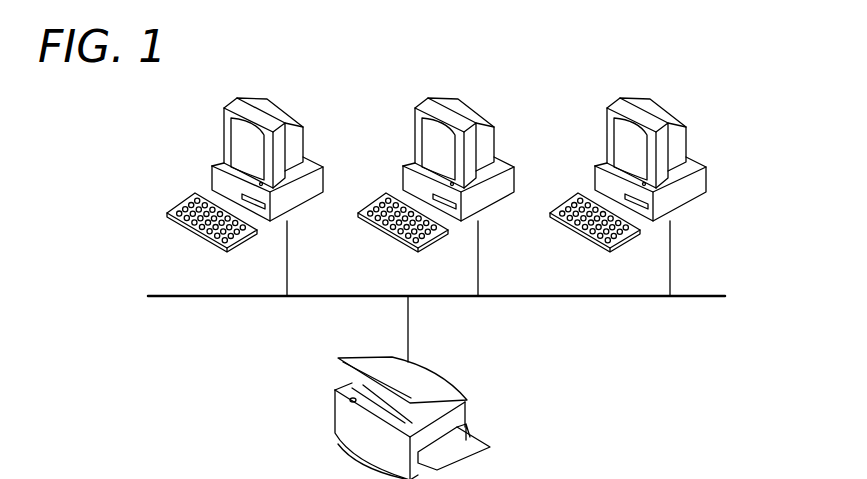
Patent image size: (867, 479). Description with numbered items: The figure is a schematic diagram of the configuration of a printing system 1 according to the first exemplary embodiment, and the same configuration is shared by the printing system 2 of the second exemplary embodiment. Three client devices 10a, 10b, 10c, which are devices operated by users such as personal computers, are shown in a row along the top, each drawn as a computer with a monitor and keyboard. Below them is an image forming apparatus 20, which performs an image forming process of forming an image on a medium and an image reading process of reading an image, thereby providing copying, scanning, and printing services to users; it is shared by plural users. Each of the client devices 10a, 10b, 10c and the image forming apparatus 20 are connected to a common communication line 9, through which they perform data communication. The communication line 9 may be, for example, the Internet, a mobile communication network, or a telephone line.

The printing system 1 is at (615, 385).
The printing system 2 is at (451, 288).
The communication line 9 is at (239, 298).
The client device 10a is at (313, 160).
The client device 10b is at (502, 160).
The client device 10c is at (692, 160).
The image forming apparatus 20 is at (452, 390).